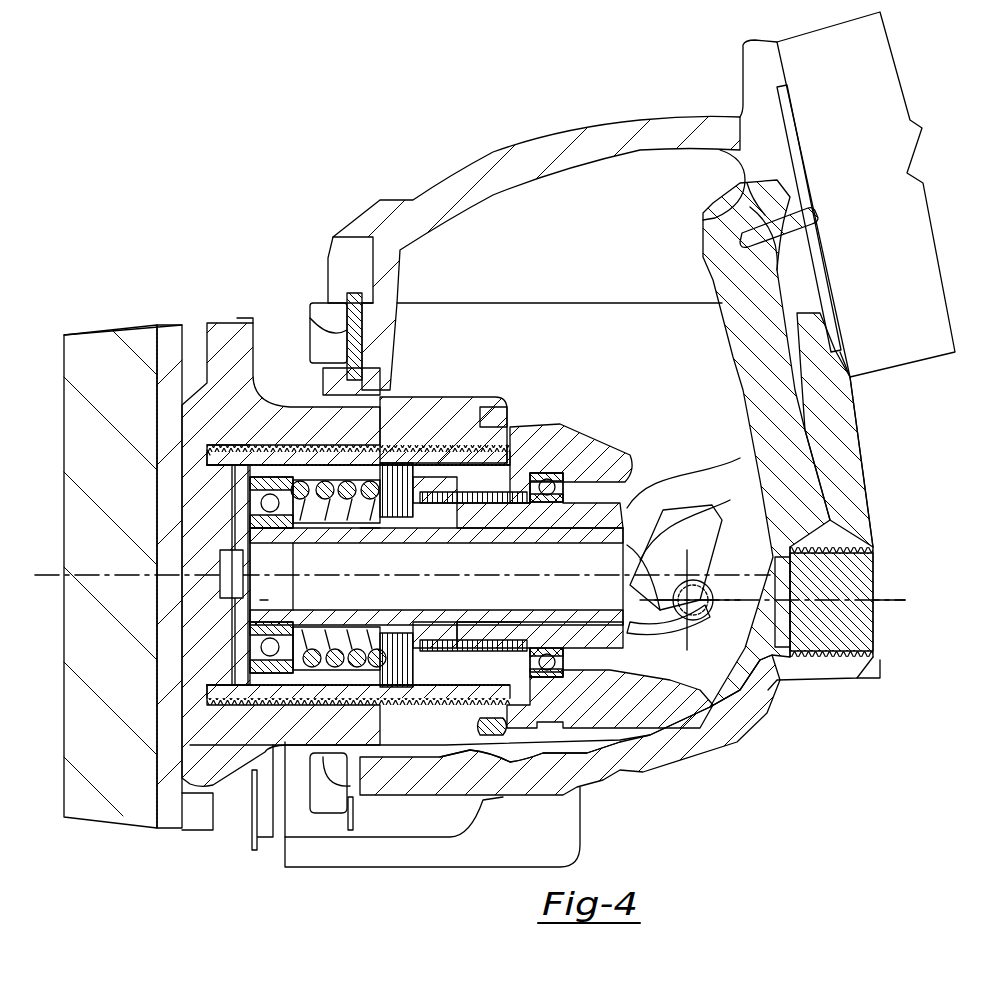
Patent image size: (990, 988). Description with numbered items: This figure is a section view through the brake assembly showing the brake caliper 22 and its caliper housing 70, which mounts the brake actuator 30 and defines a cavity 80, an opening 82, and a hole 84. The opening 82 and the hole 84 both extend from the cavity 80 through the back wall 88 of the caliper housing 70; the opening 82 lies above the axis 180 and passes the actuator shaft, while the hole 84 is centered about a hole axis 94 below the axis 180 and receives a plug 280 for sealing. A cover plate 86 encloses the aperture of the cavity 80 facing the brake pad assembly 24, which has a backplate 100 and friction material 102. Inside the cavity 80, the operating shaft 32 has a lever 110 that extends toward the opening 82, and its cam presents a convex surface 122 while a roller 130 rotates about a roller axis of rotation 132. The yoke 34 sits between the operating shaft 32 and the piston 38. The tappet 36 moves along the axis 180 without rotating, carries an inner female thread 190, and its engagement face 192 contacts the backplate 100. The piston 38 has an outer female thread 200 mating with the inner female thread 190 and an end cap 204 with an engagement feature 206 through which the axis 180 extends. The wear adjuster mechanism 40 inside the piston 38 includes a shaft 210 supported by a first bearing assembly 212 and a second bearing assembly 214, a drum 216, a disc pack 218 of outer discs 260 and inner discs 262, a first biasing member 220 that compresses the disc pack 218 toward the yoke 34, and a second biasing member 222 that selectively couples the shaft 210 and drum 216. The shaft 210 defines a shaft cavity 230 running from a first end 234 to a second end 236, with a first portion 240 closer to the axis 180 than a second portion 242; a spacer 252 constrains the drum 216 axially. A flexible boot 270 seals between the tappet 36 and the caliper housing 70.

The brake caliper 22 is at (552, 215).
The caliper housing 70 is at (558, 125).
The brake pad assembly 24 is at (100, 325).
The brake actuator 30 is at (884, 194).
The operating shaft 32 is at (820, 490).
The yoke 34 is at (600, 435).
The tappet 36 is at (222, 322).
The piston 38 is at (207, 455).
The wear adjuster mechanism 40 is at (512, 458).
The cavity 80 is at (593, 247).
The opening 82 is at (805, 290).
The hole 84 is at (830, 565).
The cover plate 86 is at (318, 310).
The back wall 88 is at (853, 397).
The hole axis 94 is at (880, 605).
The backplate 100 is at (165, 830).
The friction material 102 is at (105, 830).
The lever 110 is at (702, 232).
The convex surface 122 is at (660, 485).
The roller 130 is at (690, 640).
The roller axis of rotation 132 is at (712, 605).
The axis 180 is at (440, 575).
The inner female thread 190 is at (440, 460).
The engagement face 192 is at (200, 447).
The outer female thread 200 is at (300, 447).
The end cap 204 is at (250, 528).
The engagement feature 206 is at (232, 580).
The shaft 210 is at (612, 524).
The first bearing assembly 212 is at (250, 647).
The second bearing assembly 214 is at (552, 648).
The drum 216 is at (455, 640).
The disc pack 218 is at (400, 690).
The first biasing member 220 is at (335, 655).
The second biasing member 222 is at (505, 700).
The shaft cavity 230 is at (265, 600).
The first end 234 is at (250, 500).
The second end 236 is at (640, 520).
The first portion 240 is at (312, 610).
The second portion 242 is at (455, 622).
The spacer 252 is at (360, 625).
The outer disc 260 is at (390, 685).
The inner disc 262 is at (410, 672).
The flexible boot 270 is at (425, 398).
The plug 280 is at (858, 682).